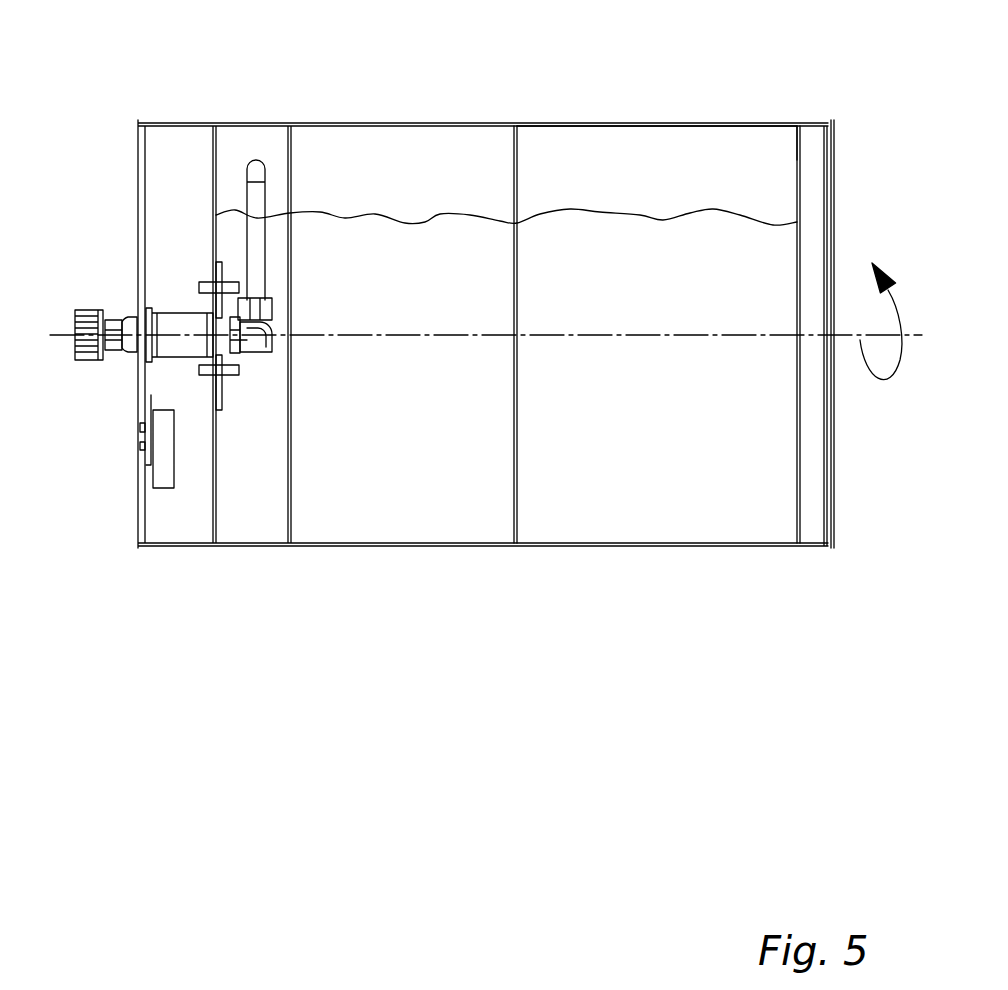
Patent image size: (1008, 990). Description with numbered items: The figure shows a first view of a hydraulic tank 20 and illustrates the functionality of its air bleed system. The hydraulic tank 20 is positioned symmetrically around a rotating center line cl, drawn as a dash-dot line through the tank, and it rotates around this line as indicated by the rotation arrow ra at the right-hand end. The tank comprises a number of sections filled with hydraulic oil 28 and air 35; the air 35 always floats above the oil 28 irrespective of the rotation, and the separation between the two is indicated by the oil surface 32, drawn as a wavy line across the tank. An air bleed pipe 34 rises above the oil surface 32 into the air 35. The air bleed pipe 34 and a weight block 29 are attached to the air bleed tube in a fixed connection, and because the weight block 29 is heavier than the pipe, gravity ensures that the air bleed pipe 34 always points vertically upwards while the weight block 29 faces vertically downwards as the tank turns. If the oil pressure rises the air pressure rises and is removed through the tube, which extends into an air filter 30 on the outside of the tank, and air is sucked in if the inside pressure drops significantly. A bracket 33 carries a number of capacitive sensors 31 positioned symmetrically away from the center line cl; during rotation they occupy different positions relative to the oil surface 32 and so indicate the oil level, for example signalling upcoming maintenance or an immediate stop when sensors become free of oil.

The hydraulic tank 20 is at (265, 546).
The hydraulic oil 28 is at (688, 513).
The weight block 29 is at (167, 492).
The air filter 30 is at (80, 360).
The capacitive sensors 31 is at (223, 365).
The oil surface 32 is at (365, 212).
The bracket 33 is at (216, 270).
The air bleed pipe 34 is at (262, 162).
The air 35 is at (698, 163).
The rotating center line cl is at (417, 338).
The rotation arrow ra is at (882, 387).